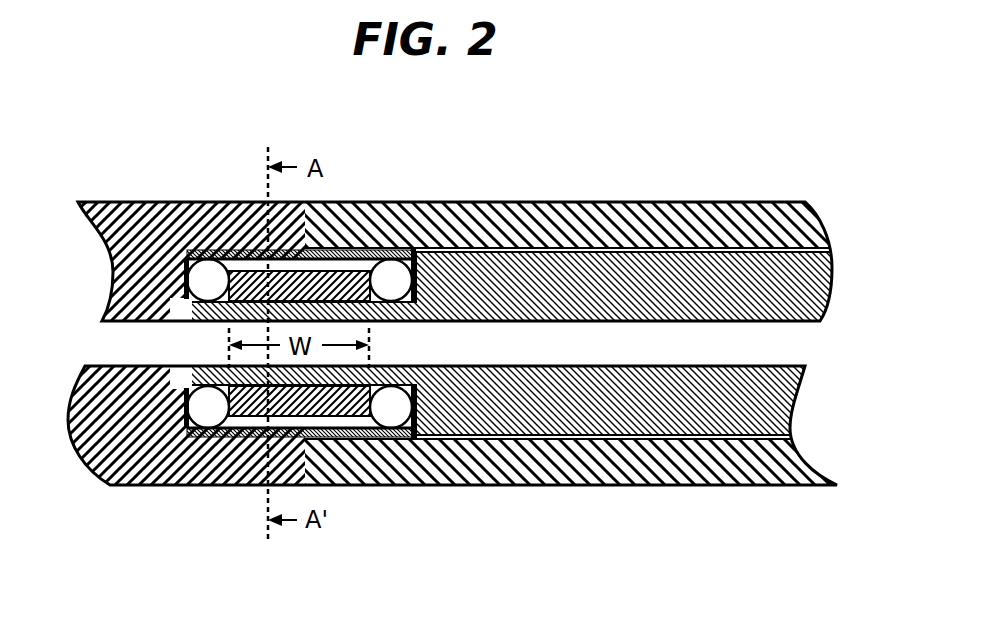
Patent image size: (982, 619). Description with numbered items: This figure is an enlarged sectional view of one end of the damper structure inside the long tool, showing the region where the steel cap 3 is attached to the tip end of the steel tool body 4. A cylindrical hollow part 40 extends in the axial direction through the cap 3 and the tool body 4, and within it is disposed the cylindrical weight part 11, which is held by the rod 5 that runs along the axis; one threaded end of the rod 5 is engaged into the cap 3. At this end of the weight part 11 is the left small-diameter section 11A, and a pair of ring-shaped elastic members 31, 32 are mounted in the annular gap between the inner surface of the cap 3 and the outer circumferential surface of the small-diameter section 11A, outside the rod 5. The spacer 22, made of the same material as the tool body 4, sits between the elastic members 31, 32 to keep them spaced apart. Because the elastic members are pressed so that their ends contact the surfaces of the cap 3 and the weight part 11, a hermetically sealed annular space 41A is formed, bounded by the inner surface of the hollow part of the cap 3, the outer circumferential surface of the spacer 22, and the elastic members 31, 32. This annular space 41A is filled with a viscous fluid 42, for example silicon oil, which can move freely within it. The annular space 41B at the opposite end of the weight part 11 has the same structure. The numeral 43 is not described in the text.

The cap 3 is at (180, 210).
The tool body 4 is at (585, 215).
The rod 5 is at (128, 348).
The weight part 11 is at (605, 418).
The left small-diameter section 11A is at (251, 300).
The spacer 22 is at (340, 416).
The ring-shaped elastic member 31 is at (207, 410).
The ring-shaped elastic member 32 is at (391, 412).
The hollow part 40 is at (702, 252).
The annular space 41A is at (384, 252).
The annular space 41B is at (348, 277).
The viscous fluid 42 is at (325, 272).
The bonding layer 43 is at (630, 320).